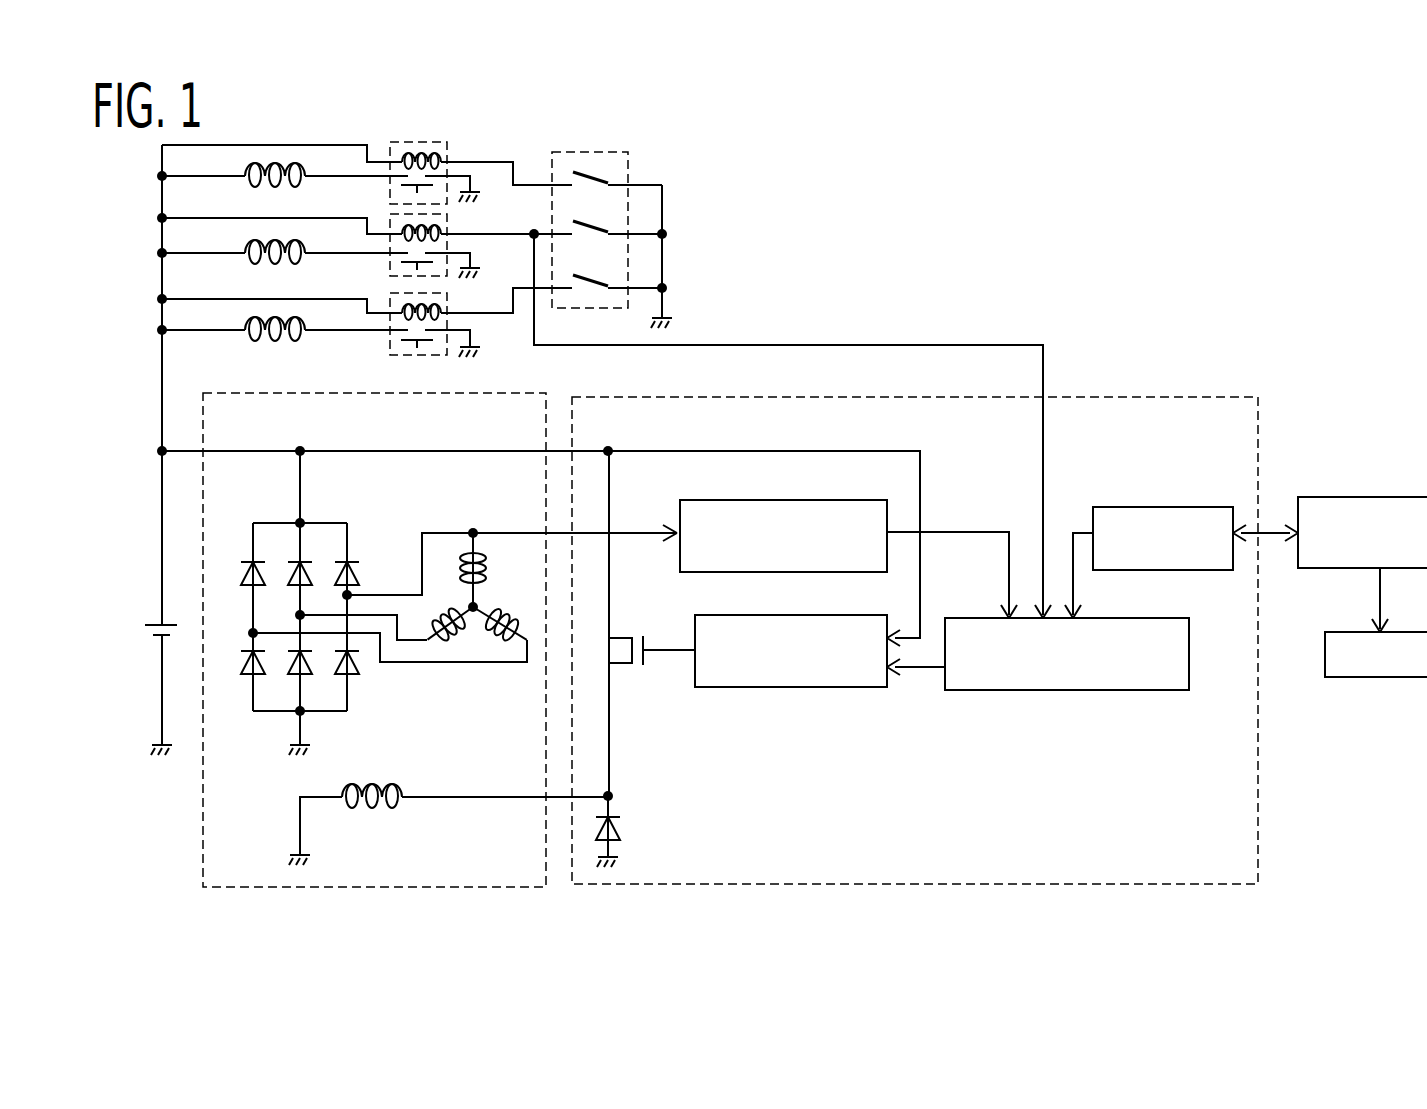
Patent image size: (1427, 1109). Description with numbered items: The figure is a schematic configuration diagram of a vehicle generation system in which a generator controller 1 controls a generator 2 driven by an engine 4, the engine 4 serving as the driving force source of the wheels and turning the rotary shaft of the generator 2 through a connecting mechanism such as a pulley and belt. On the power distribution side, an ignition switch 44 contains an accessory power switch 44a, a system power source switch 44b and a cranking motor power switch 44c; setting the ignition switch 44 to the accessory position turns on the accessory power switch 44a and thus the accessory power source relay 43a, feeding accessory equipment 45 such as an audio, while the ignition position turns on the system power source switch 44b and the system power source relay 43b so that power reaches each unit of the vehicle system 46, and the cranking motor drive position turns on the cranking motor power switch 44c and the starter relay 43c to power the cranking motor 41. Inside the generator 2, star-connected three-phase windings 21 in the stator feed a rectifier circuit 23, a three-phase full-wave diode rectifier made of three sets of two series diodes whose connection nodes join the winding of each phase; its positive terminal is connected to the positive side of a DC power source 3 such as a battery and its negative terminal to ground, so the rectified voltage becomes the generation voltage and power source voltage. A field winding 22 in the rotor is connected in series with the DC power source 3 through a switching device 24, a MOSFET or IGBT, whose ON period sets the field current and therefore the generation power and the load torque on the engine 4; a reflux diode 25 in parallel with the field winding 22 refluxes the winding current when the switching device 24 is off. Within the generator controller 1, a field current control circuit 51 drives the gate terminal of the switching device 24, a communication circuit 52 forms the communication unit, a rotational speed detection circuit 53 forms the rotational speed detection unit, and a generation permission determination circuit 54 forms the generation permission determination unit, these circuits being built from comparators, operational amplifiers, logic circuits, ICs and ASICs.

The generator controller 1 is at (1188, 396).
The generator 2 is at (493, 393).
The DC power source 3 is at (143, 623).
The engine 4 is at (1380, 497).
The three-phase windings 21 is at (482, 679).
The field winding 22 is at (370, 778).
The rectifier circuit 23 is at (346, 508).
The switching device 24 is at (632, 636).
The reflux diode 25 is at (622, 829).
The cranking motor 41 is at (259, 346).
The accessory power source relay 43a is at (392, 142).
The system power source relay 43b is at (392, 214).
The starter relay 43c is at (392, 293).
The ignition switch 44 is at (622, 224).
The accessory power switch 44a is at (593, 176).
The system power source switch 44b is at (593, 226).
The cranking motor power switch 44c is at (593, 278).
The accessory equipment 45 is at (257, 190).
The vehicle system 46 is at (257, 266).
The field current control circuit 51 is at (828, 615).
The communication circuit 52 is at (1165, 507).
The rotational speed detection circuit 53 is at (823, 500).
The generation permission determination circuit 54 is at (1193, 648).